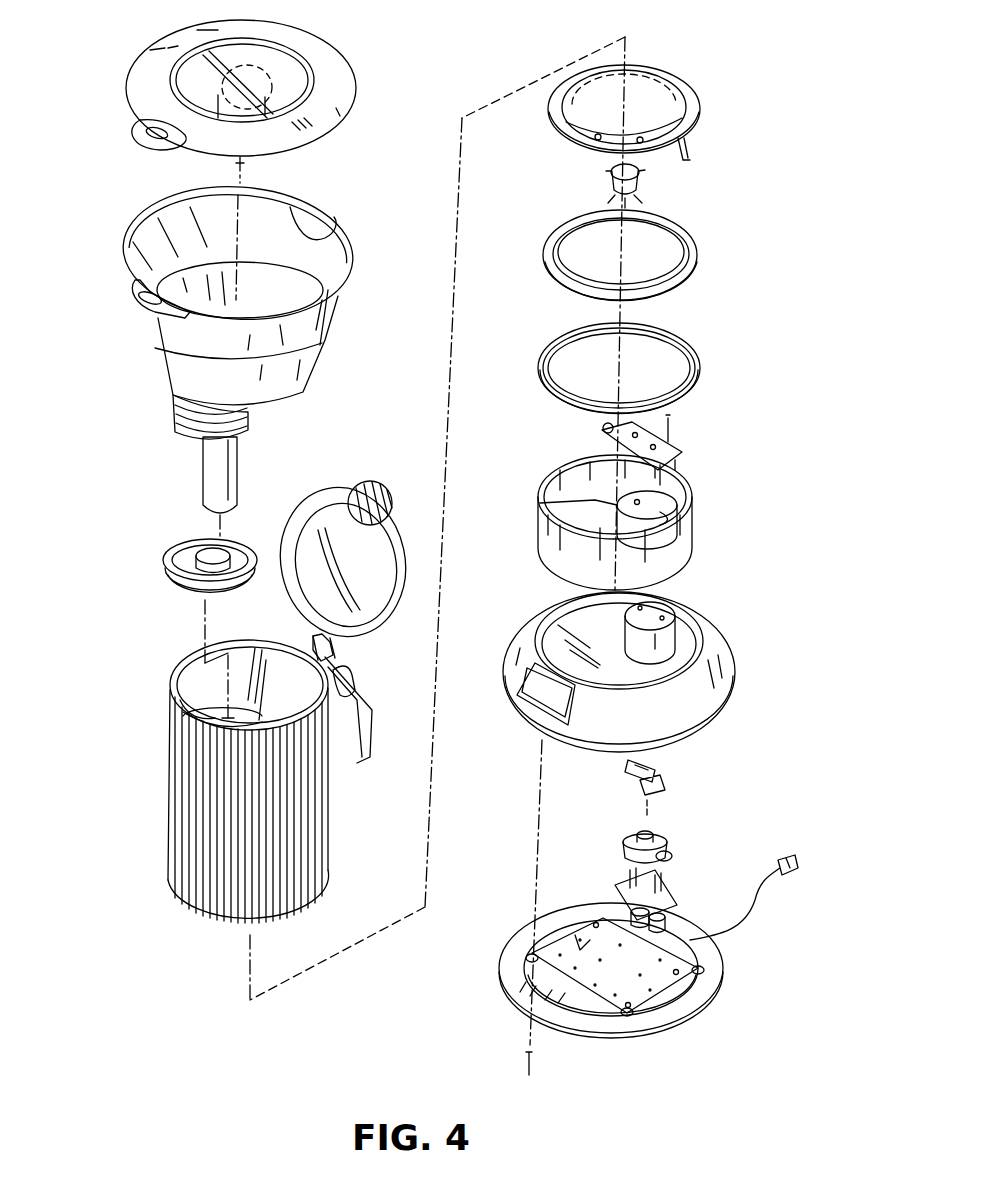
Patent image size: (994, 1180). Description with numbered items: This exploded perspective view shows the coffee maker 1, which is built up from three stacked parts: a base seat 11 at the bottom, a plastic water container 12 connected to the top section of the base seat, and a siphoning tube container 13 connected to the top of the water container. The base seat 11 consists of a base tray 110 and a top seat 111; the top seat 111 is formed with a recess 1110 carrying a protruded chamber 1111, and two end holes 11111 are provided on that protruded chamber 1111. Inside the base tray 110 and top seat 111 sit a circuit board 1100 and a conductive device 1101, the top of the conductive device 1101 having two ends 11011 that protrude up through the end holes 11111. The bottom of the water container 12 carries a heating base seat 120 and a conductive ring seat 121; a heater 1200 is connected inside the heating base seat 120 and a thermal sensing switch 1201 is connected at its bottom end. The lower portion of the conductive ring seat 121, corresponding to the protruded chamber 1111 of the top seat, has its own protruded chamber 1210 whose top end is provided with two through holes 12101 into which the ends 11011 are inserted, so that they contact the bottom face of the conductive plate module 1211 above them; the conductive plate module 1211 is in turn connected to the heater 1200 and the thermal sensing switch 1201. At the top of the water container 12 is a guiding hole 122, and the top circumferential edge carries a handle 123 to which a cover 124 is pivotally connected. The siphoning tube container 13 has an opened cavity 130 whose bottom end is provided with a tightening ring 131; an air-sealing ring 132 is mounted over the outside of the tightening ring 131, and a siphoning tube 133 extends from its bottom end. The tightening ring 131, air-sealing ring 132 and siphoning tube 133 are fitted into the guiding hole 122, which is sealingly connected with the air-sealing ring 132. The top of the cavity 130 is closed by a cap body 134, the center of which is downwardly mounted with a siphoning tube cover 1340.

The coffee maker 1 is at (120, 182).
The base seat 11 is at (660, 818).
The base tray 110 is at (654, 968).
The circuit board 1100 is at (623, 970).
The conductive device 1101 is at (683, 898).
The ends 11011 is at (660, 763).
The top seat 111 is at (637, 654).
The recess 1110 is at (594, 618).
The protruded chamber 1111 is at (721, 610).
The end holes 11111 is at (662, 618).
The water container 12 is at (247, 664).
The heating base seat 120 is at (698, 112).
The heater 1200 is at (680, 77).
The thermal sensing switch 1201 is at (643, 178).
The conductive ring seat 121 is at (633, 455).
The protruded chamber 1210 is at (672, 497).
The through holes 12101 is at (540, 502).
The conductive plate module 1211 is at (683, 457).
The guiding hole 122 is at (205, 722).
The handle 123 is at (373, 712).
The cover 124 is at (306, 497).
The siphoning tube container 13 is at (246, 375).
The opened cavity 130 is at (282, 284).
The tightening ring 131 is at (172, 409).
The air-sealing ring 132 is at (163, 562).
The siphoning tube 133 is at (203, 475).
The cap body 134 is at (289, 79).
The siphoning tube cover 1340 is at (315, 80).